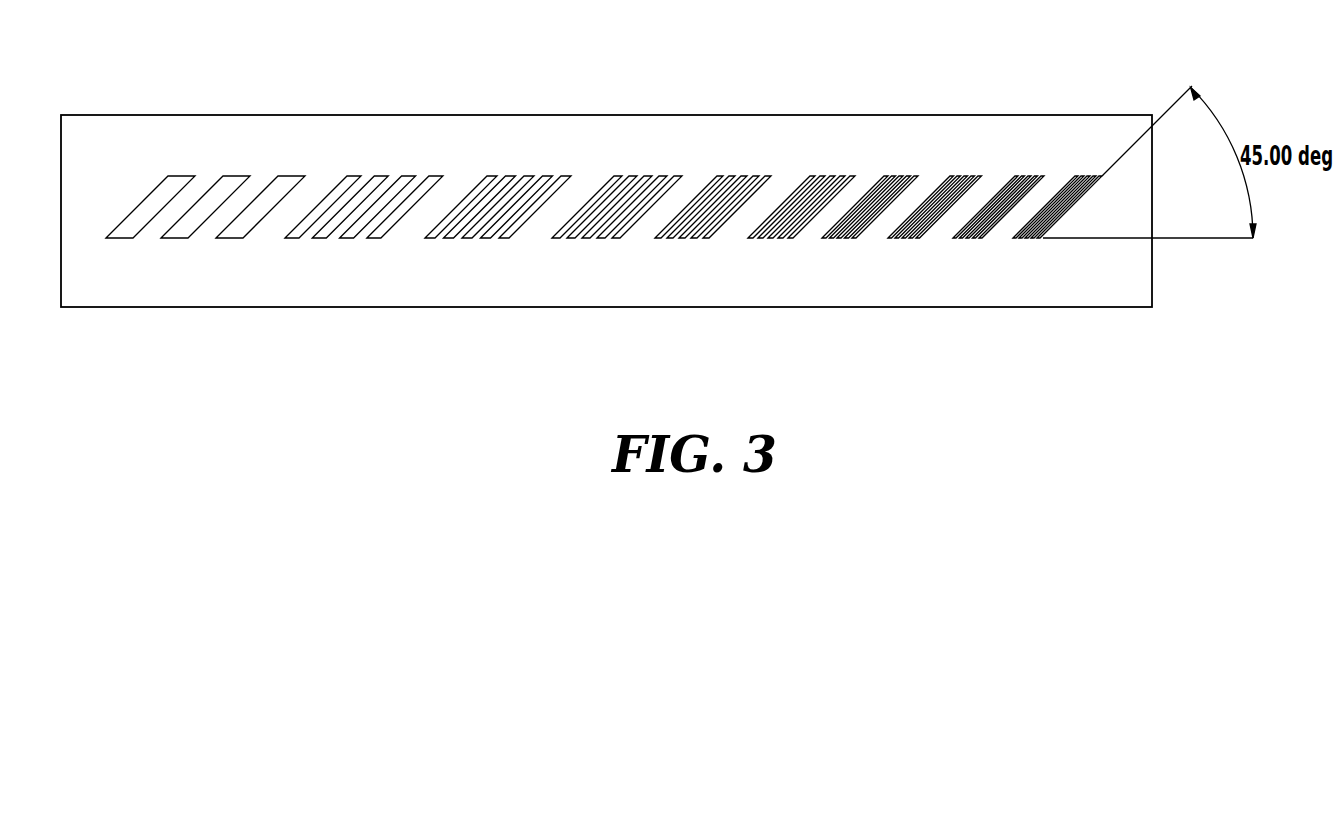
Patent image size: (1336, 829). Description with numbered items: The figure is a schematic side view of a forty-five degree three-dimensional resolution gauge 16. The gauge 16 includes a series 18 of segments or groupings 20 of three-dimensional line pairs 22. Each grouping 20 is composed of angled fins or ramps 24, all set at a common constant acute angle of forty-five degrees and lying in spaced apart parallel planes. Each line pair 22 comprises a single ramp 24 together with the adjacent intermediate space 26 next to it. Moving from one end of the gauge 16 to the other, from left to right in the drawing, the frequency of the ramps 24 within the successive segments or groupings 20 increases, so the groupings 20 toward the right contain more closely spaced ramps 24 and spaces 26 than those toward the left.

The resolution gauge 16 is at (630, 127).
The series 18 is at (1037, 240).
The grouping 20 is at (348, 168).
The line pair 22 is at (205, 174).
The ramp 24 is at (177, 234).
The intermediate space 26 is at (204, 234).